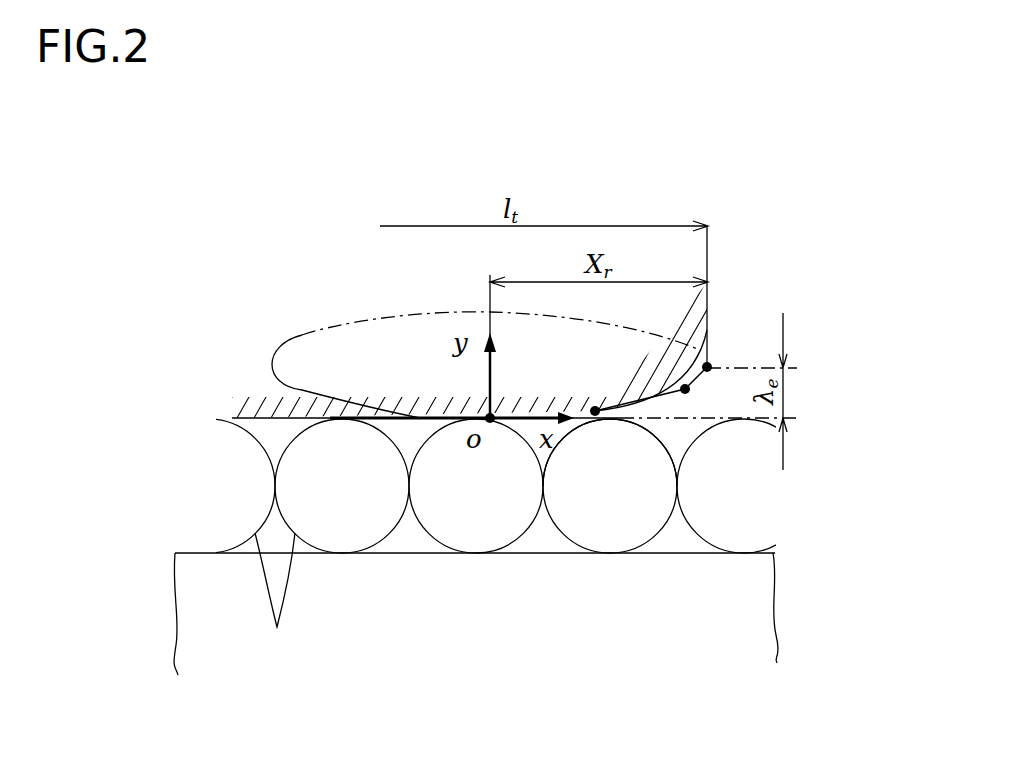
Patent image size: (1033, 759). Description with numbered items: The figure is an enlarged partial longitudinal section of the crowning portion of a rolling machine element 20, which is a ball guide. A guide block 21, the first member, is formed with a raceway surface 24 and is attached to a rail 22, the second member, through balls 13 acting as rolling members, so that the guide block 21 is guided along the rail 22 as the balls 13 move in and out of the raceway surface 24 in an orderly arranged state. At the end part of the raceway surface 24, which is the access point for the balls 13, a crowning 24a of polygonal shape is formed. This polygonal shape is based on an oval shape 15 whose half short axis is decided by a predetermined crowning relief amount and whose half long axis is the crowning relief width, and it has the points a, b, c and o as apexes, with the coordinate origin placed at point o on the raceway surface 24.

The rolling machine element 20 is at (291, 218).
The oval shape 15 is at (383, 317).
The guide block 21 is at (707, 323).
The rail 22 is at (195, 553).
The raceway surface 24 is at (343, 455).
The crowning 24a is at (650, 400).
The balls 13 is at (277, 627).